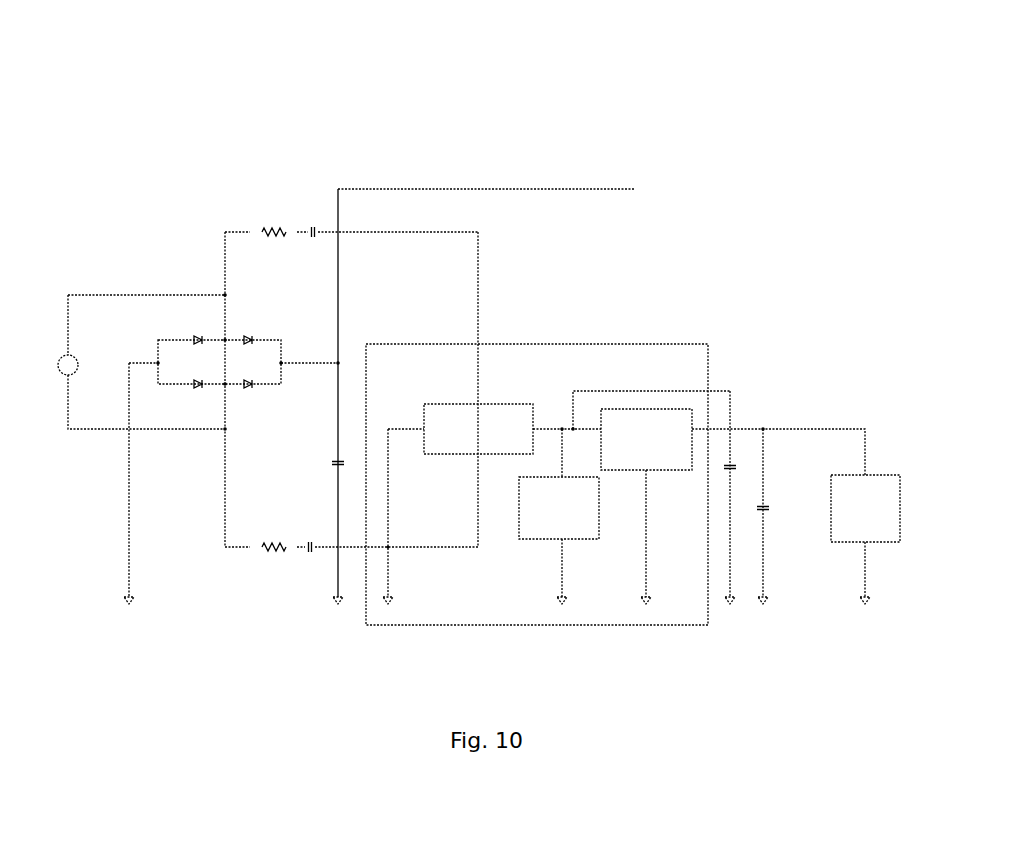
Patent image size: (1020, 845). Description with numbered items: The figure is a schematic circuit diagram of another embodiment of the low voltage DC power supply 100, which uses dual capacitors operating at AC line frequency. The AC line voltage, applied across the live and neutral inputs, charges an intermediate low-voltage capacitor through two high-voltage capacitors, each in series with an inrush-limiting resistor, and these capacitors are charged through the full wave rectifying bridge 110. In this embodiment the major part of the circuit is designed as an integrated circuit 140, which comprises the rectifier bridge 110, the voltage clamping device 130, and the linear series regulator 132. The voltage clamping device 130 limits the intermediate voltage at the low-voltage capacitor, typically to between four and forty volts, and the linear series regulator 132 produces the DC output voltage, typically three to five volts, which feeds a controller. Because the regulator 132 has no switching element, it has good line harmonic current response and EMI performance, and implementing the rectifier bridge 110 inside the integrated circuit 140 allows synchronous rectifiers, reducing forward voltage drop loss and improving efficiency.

The power supply circuit 100 is at (529, 107).
The integrated circuit 140 is at (718, 315).
The full wave rectifying bridge 110 is at (437, 442).
The voltage clamping device 130 is at (590, 526).
The linear series regulator 132 is at (664, 459).